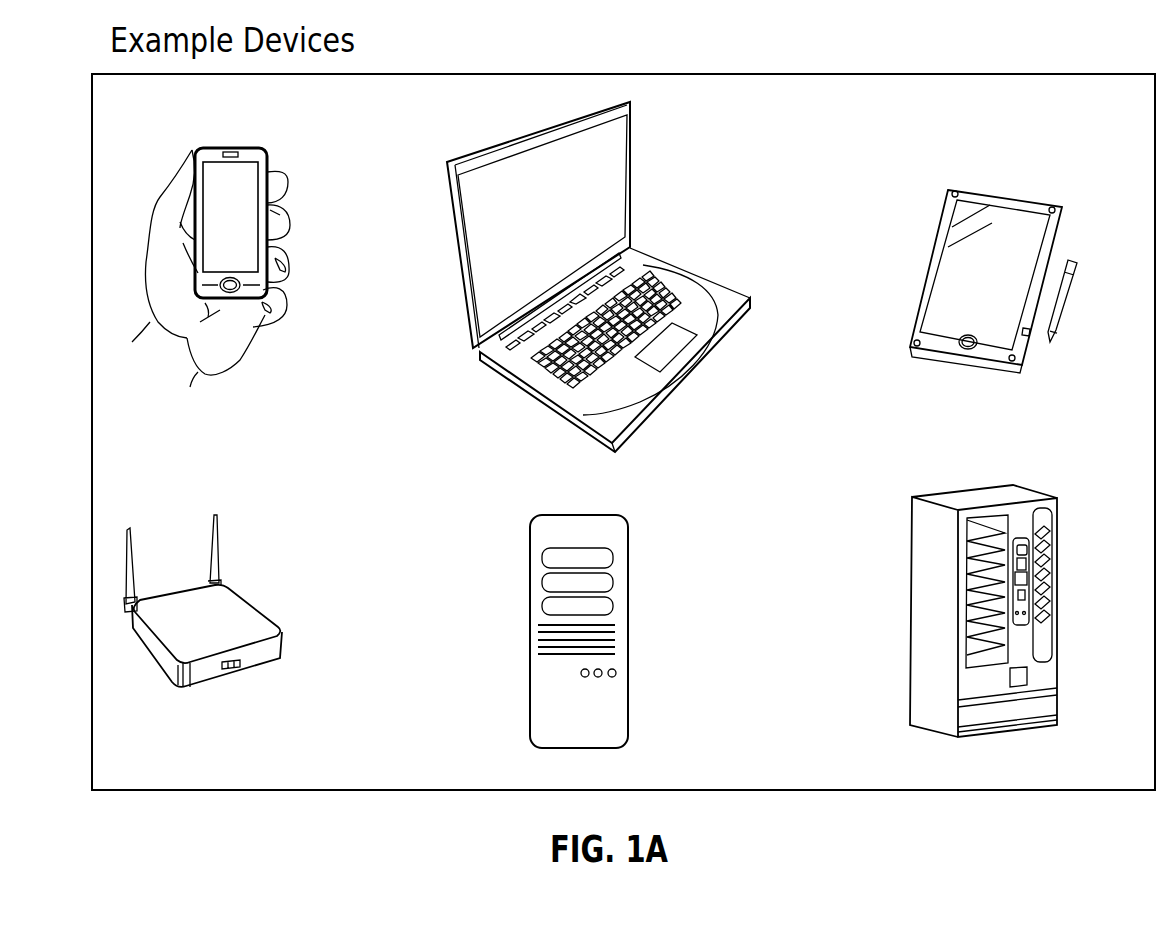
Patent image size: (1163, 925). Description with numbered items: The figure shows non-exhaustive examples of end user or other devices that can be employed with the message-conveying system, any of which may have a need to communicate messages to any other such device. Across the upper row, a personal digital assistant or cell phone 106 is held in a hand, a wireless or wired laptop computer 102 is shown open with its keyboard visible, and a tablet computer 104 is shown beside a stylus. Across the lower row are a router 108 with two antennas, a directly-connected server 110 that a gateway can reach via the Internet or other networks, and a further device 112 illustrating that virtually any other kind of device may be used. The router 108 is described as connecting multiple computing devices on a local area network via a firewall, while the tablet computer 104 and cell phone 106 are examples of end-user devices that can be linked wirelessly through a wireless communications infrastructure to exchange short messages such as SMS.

The laptop computer 102 is at (690, 286).
The tablet computer 104 is at (1024, 237).
The cell phone 106 is at (222, 176).
The router 108 is at (272, 620).
The server 110 is at (605, 707).
The vending machine 112 is at (1047, 672).